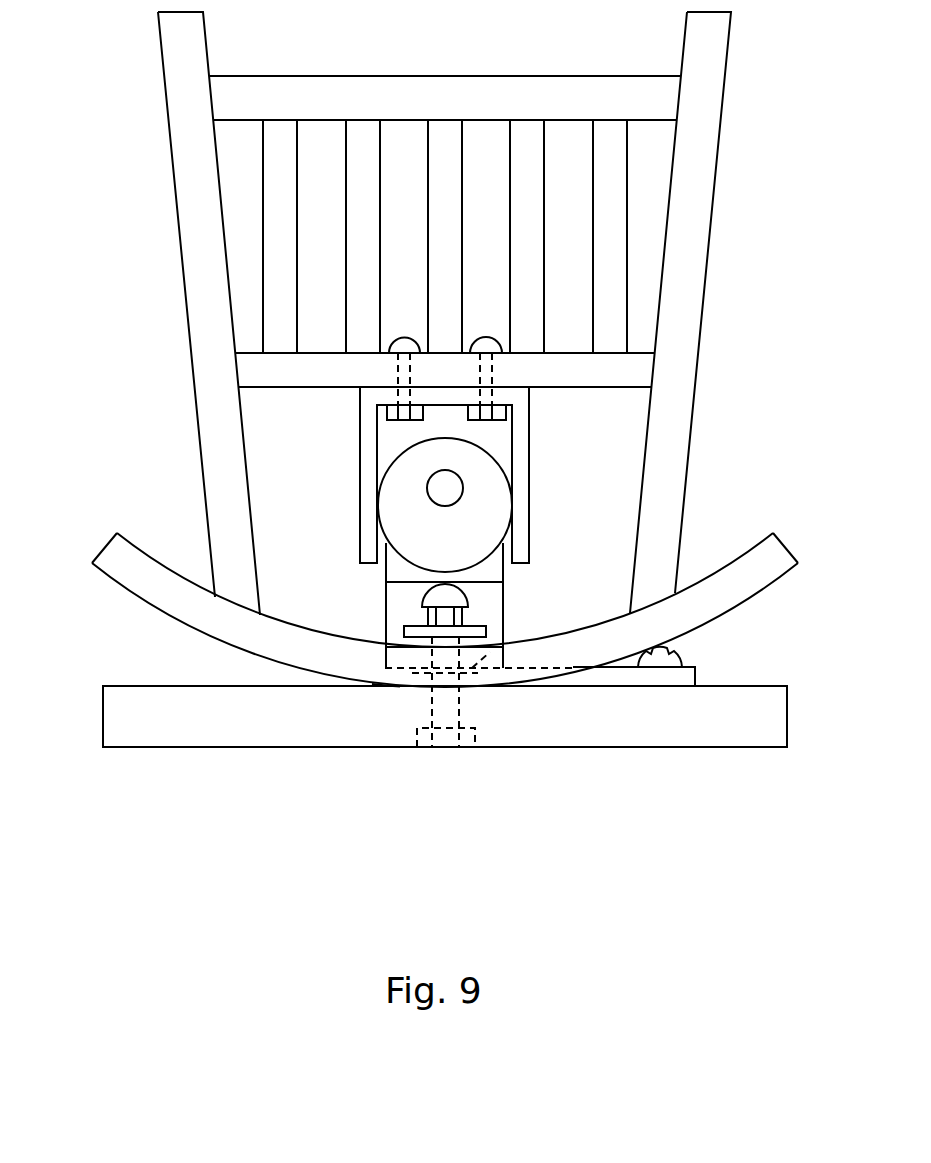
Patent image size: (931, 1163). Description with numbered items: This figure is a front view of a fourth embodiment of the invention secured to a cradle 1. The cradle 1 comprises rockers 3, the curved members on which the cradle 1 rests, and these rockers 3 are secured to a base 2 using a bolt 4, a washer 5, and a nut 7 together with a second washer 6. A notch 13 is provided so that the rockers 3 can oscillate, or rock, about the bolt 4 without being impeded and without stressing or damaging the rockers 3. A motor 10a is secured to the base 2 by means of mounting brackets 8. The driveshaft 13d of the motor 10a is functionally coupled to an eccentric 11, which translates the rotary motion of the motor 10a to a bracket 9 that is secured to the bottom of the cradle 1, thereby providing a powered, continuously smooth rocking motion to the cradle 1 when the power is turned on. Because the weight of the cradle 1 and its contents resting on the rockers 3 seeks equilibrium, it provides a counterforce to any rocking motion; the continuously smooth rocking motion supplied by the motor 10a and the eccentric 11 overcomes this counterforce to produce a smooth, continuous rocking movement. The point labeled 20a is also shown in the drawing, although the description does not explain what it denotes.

The cradle 1 is at (695, 258).
The base 2 is at (585, 730).
The rockers 3 is at (95, 558).
The bolt 4 is at (445, 738).
The washer 5 is at (470, 686).
The washer 6 is at (487, 632).
The nut 7 is at (432, 591).
The mounting brackets 8 is at (607, 684).
The bracket 9 is at (522, 417).
The motor 10a is at (529, 563).
The eccentric 11 is at (468, 547).
The notch 13 is at (413, 665).
The driveshaft 13d is at (448, 490).
The contact point 20a is at (385, 686).